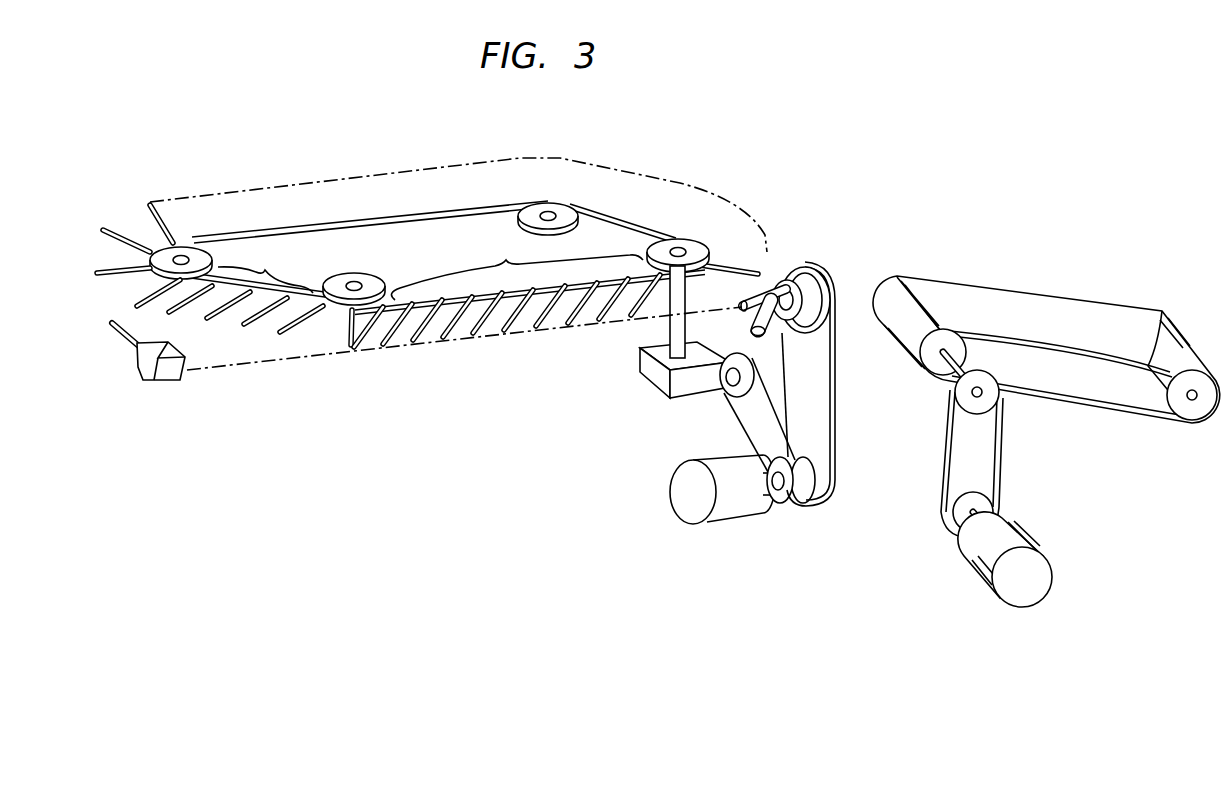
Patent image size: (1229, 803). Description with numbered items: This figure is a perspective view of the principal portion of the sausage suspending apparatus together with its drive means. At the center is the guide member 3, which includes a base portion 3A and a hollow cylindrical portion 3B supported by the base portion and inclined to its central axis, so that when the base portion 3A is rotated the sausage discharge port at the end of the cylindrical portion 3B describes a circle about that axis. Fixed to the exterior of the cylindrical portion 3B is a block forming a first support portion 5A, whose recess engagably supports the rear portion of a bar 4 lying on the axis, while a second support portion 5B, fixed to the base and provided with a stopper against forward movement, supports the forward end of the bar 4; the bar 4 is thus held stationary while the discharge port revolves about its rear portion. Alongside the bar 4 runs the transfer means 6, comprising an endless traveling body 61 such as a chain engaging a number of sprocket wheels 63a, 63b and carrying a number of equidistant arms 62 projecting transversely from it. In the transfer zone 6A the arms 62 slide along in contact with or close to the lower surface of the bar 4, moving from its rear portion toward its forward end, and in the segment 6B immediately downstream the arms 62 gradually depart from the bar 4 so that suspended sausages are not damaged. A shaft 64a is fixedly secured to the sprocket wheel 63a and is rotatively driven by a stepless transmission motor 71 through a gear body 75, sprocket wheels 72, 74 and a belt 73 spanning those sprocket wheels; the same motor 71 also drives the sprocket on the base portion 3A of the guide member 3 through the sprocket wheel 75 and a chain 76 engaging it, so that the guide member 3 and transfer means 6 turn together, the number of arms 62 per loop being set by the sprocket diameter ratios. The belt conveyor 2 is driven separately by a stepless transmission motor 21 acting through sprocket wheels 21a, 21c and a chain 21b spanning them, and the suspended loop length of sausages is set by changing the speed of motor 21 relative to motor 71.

The belt conveyor 2 is at (1028, 310).
The guide member 3 is at (837, 267).
The base portion 3A is at (818, 280).
The hollow cylindrical portion 3B is at (778, 288).
The bar 4 is at (293, 363).
The first support portion 5A is at (754, 302).
The second support portion 5B is at (165, 375).
The transfer means 6 is at (381, 195).
The transfer zone 6A is at (517, 269).
The segment 6B is at (265, 270).
The endless traveling body 61 is at (543, 300).
The arms 62 is at (527, 307).
The sprocket wheel 63a is at (698, 247).
The sprocket wheel 63b is at (549, 212).
The shaft 64a is at (679, 250).
The stepless transmission motor 71 is at (727, 527).
The sprocket wheel 72 is at (773, 507).
The belt 73 is at (737, 430).
The sprocket wheel 74 is at (730, 400).
The gear body / sprocket wheel 75 is at (657, 380).
The chain 76 is at (835, 380).
The stepless transmission motor 21 is at (1008, 592).
The sprocket wheel 21a is at (978, 507).
The chain 21b is at (1000, 468).
The sprocket wheel 21c is at (987, 398).